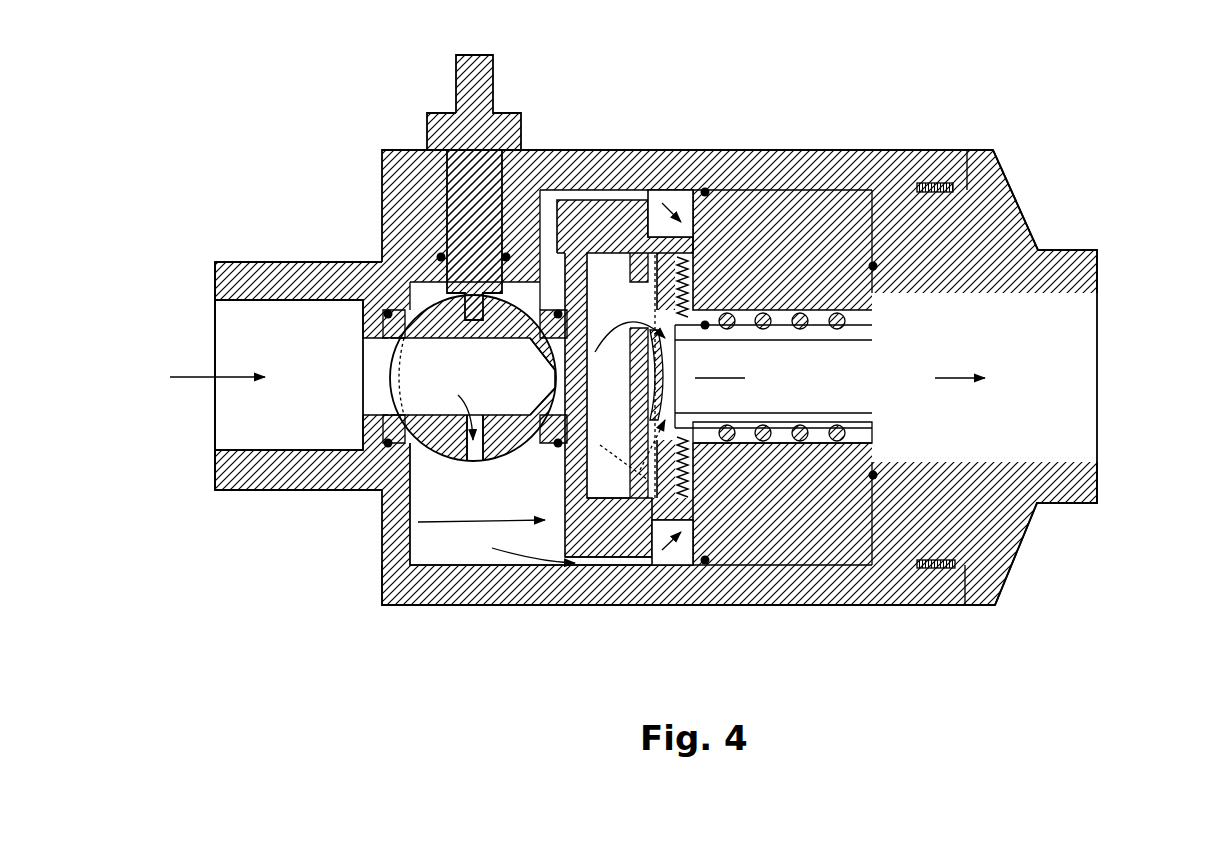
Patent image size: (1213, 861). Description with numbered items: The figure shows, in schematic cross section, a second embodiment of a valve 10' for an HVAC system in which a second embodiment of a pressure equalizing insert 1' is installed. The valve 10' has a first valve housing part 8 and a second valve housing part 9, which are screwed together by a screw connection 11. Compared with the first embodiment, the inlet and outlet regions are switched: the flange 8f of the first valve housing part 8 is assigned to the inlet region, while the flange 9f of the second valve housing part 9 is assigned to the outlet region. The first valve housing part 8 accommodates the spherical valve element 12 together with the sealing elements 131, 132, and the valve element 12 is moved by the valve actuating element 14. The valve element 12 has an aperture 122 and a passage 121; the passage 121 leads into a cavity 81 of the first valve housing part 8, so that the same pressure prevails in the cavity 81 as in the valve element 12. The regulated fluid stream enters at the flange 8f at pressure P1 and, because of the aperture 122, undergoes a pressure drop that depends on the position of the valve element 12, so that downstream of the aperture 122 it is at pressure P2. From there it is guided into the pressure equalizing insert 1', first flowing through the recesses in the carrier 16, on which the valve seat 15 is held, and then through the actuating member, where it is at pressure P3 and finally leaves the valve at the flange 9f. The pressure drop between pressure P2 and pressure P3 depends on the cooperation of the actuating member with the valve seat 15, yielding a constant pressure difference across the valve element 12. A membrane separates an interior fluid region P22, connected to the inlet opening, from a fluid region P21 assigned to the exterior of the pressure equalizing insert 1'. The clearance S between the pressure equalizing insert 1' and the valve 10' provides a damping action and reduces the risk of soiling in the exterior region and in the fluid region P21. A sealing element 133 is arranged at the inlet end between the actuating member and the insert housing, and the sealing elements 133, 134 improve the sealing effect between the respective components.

The pressure equalizing insert 1' is at (480, 398).
The first valve housing part 8 is at (250, 262).
The flange of the first valve housing part 8f is at (212, 268).
The second valve housing part 9 is at (1030, 222).
The flange of the second valve housing part 9f is at (1106, 278).
The valve 10' is at (286, 642).
The screw connection 11 is at (950, 188).
The valve element 12 is at (382, 232).
The passage 121 is at (450, 462).
The aperture 122 is at (540, 378).
The sealing element 131 is at (553, 310).
The sealing element 132 is at (393, 310).
The sealing element 133 is at (705, 325).
The sealing element 134 is at (705, 190).
The valve actuating element 14 is at (433, 148).
The valve seat 15 is at (660, 330).
The carrier 16 is at (730, 342).
The cavity 81 is at (440, 522).
The clearance S is at (590, 565).
The pressure P1 is at (357, 429).
The pressure P2 is at (608, 430).
The fluid region assigned to the exterior P21 is at (693, 478).
The interior fluid region P22 is at (670, 482).
The pressure P3 is at (865, 380).